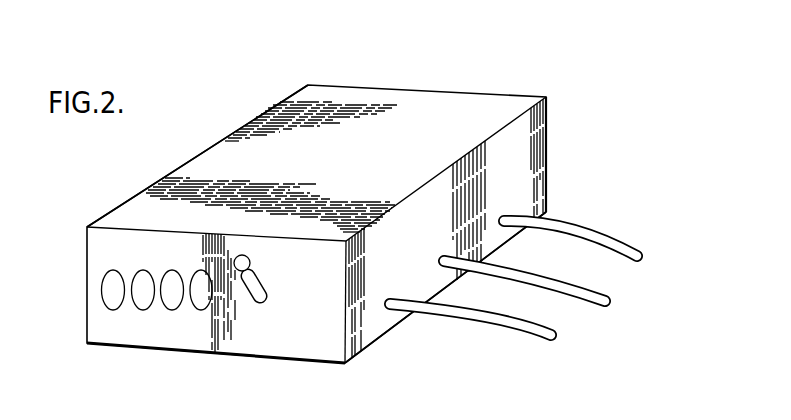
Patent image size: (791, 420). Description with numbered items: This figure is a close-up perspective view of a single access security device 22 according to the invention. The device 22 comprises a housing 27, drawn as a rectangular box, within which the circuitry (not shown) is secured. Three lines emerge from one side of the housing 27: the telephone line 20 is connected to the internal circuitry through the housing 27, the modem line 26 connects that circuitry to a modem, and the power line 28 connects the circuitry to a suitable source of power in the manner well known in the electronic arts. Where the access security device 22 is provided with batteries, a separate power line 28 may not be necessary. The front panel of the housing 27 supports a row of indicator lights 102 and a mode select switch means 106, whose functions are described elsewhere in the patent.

The access security device 22 is at (384, 74).
The housing 27 is at (224, 140).
The indicator lights 102 is at (113, 311).
The mode select switch means 106 is at (263, 302).
The power line 28 is at (594, 246).
The telephone line 20 is at (542, 285).
The modem line 26 is at (496, 324).